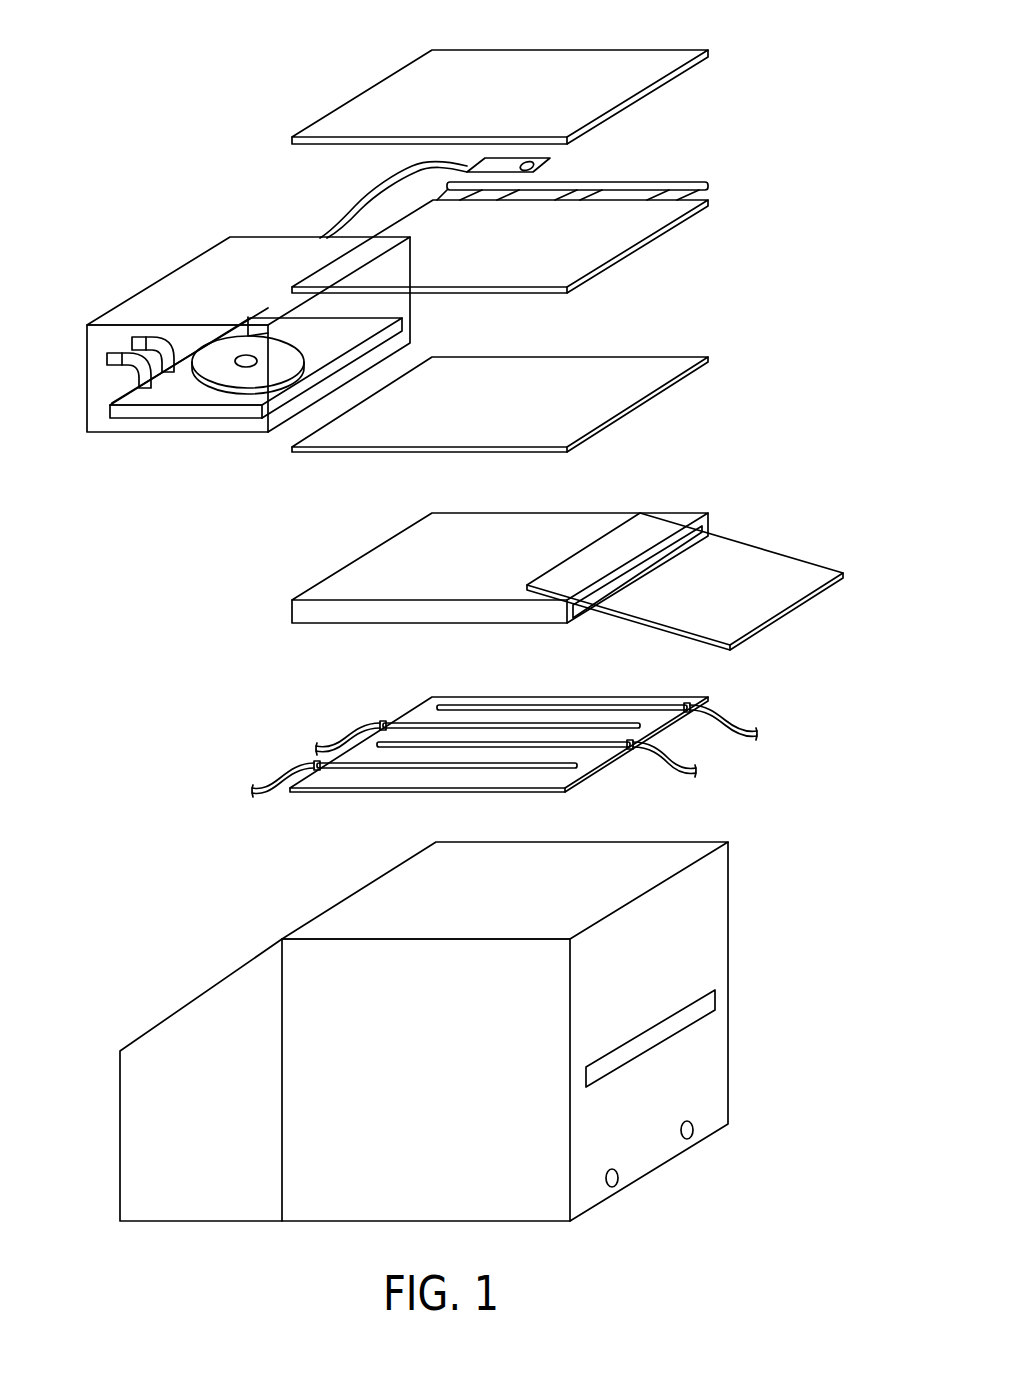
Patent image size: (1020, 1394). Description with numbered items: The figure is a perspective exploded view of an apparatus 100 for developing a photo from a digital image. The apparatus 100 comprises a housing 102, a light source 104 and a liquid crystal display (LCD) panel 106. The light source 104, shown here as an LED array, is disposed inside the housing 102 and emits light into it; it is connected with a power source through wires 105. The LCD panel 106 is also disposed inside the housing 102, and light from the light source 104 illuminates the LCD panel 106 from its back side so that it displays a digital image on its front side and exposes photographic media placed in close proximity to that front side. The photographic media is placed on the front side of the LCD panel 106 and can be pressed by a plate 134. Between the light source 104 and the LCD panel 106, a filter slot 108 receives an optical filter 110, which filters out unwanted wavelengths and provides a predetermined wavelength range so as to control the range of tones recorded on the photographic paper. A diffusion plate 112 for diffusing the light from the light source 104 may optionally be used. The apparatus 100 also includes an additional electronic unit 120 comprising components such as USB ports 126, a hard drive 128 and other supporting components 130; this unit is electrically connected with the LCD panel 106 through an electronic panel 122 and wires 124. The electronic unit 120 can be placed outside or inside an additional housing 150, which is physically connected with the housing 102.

The apparatus 100 is at (168, 99).
The housing 102 is at (454, 1031).
The light source 104 is at (504, 730).
The wires 105 is at (350, 730).
The liquid crystal display (LCD) panel 106 is at (673, 227).
The filter slot 108 is at (527, 512).
The optical filter 110 is at (762, 548).
The diffusion plate 112 is at (547, 357).
The additional electronic unit 120 is at (226, 352).
The electronic panel 122 is at (630, 181).
The wires 124 is at (355, 202).
The universal serial bus (USB) ports 126 is at (120, 352).
The hard drive 128 is at (230, 385).
The supporting components 130 is at (153, 413).
The plate 134 is at (527, 50).
The additional housing 150 is at (189, 1006).